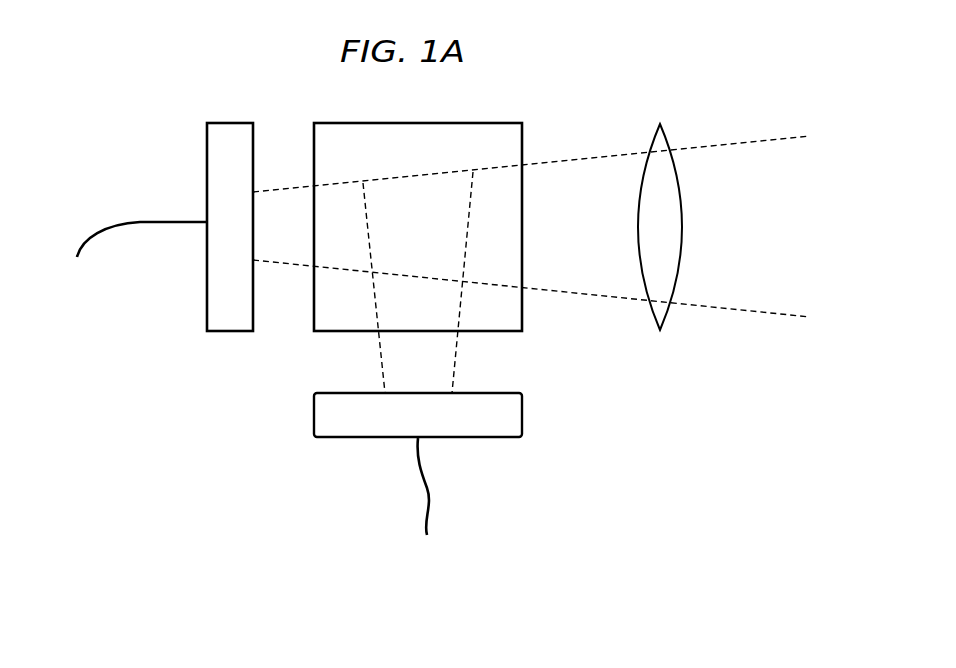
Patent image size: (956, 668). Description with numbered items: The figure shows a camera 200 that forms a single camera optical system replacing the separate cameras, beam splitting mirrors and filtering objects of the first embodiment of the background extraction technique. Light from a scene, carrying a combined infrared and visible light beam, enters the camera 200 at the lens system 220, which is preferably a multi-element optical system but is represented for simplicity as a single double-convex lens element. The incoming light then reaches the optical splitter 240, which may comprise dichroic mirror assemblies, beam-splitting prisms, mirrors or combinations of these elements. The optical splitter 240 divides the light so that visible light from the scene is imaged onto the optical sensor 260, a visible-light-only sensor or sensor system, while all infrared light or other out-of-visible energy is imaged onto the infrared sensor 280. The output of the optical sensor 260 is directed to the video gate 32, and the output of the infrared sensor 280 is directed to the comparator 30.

The camera 200 is at (526, 95).
The lens system 220 is at (668, 140).
The optical splitter 240 is at (314, 143).
The optical sensor 260 is at (522, 407).
The infrared sensor 280 is at (207, 158).
The comparator 30 is at (115, 278).
The video gate 32 is at (424, 527).